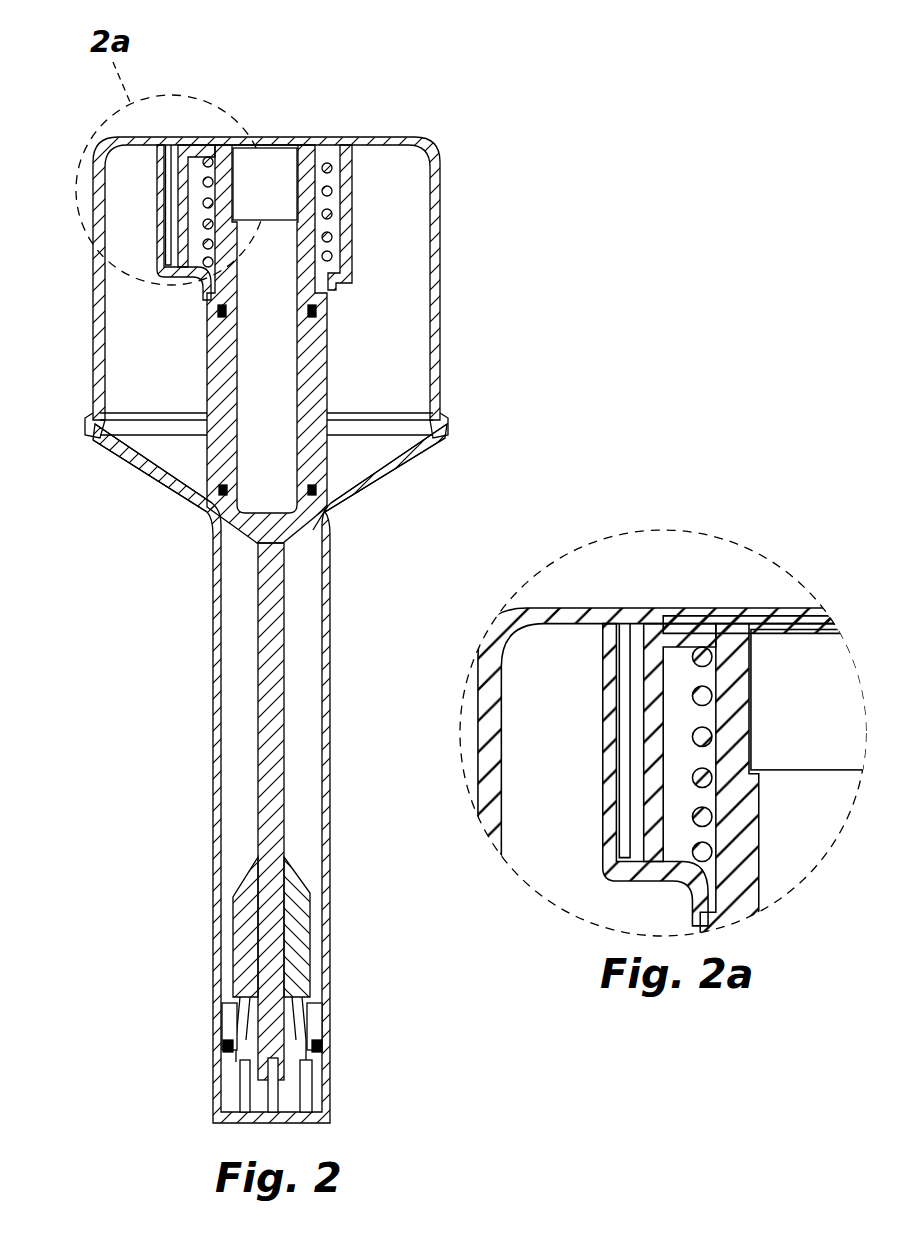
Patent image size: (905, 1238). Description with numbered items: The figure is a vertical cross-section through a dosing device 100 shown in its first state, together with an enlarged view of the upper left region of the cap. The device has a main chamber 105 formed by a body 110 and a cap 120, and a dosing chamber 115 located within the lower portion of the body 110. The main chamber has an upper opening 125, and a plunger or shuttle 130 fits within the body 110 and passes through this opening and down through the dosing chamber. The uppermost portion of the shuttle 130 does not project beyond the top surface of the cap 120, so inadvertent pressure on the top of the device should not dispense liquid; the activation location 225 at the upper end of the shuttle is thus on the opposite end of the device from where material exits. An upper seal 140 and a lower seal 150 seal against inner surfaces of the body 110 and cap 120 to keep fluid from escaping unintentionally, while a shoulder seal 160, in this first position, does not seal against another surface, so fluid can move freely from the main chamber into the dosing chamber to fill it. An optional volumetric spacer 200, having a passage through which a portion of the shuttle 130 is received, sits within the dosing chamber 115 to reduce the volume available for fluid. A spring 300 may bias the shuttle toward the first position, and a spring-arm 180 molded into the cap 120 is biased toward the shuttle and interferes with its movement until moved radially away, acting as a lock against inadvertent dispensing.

In FIG. 2, the dosing device 100 is at (435, 123).
In FIG. 2, the main chamber 105 is at (410, 325).
In FIG. 2, the body 110 is at (366, 460).
In FIG. 2, the dosing chamber 115 is at (305, 655).
In FIG. 2, the cap 120 is at (441, 232).
In FIG. 2, the upper opening 125 is at (315, 524).
In FIG. 2, the plunger or shuttle 130 is at (262, 632).
In FIG. 2, the upper seal 140 is at (218, 310).
In FIG. 2, the lower seal 150 is at (225, 1046).
In FIG. 2, the shoulder seal 160 is at (218, 490).
In FIG. 2, the spring-arm 180 is at (188, 140).
In FIG. 2A, the spring-arm 180 is at (653, 635).
In FIG. 2, the volumetric spacer 200 is at (300, 893).
In FIG. 2, the activation location 225 is at (283, 146).
In FIG. 2A, the activation location 225 is at (778, 620).
In FIG. 2, the spring 300 is at (330, 170).
In FIG. 2A, the spring 300 is at (704, 655).